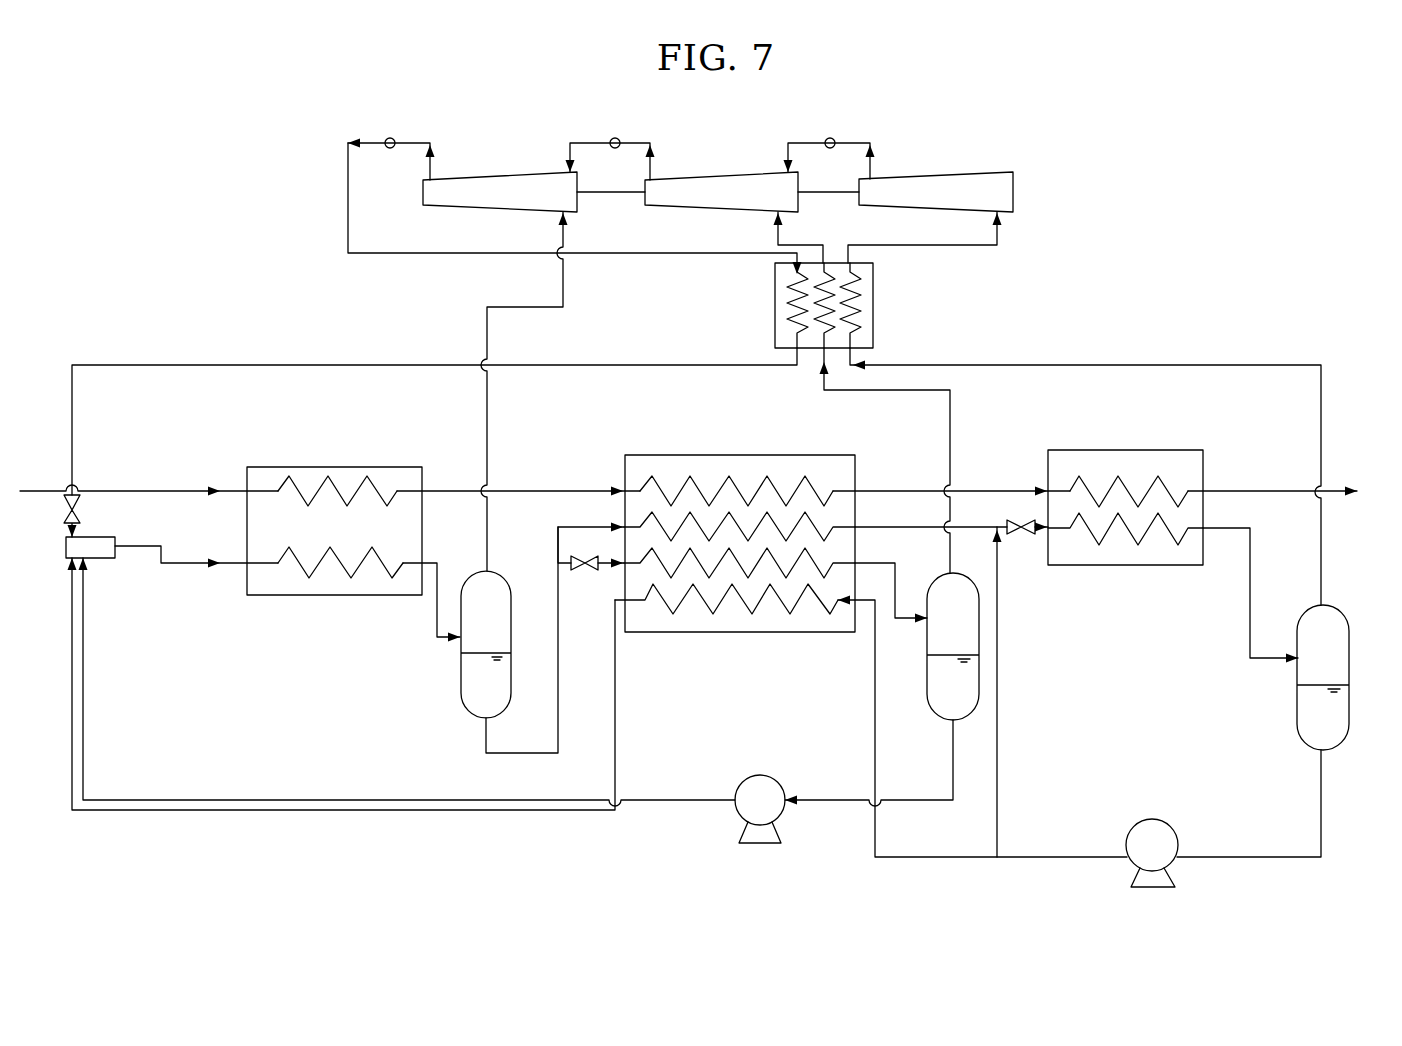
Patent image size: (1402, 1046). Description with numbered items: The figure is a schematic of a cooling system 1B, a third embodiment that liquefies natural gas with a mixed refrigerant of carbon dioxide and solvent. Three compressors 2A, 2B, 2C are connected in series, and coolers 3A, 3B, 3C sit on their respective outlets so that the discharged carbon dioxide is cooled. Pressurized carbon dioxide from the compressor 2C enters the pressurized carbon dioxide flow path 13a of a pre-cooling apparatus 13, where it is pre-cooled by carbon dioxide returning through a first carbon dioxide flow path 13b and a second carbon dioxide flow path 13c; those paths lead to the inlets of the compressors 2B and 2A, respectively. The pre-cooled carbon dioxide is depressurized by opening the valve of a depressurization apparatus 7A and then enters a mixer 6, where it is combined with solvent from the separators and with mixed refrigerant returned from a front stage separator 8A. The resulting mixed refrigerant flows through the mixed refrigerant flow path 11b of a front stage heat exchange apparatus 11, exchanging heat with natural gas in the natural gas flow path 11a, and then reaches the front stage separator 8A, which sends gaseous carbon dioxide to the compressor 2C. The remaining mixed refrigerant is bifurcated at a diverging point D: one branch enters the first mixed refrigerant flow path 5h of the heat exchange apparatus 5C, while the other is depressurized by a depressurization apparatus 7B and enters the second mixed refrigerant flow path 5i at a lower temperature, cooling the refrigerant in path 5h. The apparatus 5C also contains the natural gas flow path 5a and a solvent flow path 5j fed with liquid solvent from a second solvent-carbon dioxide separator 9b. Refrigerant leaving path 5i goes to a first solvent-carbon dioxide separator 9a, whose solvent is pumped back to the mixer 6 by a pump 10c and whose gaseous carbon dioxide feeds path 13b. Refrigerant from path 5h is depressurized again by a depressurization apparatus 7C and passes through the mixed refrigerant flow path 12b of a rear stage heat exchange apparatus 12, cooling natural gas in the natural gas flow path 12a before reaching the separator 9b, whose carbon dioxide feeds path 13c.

The cooling system 1B is at (174, 164).
The compressor 2A is at (912, 178).
The compressor 2B is at (684, 178).
The compressor 2C is at (480, 178).
The cooler 3A is at (830, 138).
The cooler 3B is at (615, 138).
The cooler 3C is at (390, 138).
The heat exchange apparatus 5C is at (655, 455).
The natural gas flow path 5a is at (778, 485).
The first mixed refrigerant flow path 5h is at (806, 520).
The second mixed refrigerant flow path 5i is at (717, 568).
The solvent flow path 5j is at (735, 590).
The mixer 6 is at (66, 545).
The depressurization apparatus 7A is at (80, 498).
The depressurization apparatus 7B is at (585, 570).
The depressurization apparatus 7C is at (1025, 535).
The front stage separator 8A is at (511, 632).
The first solvent-carbon dioxide separator 9a is at (940, 721).
The second solvent-carbon dioxide separator 9b is at (1350, 630).
The pump 10c is at (742, 784).
The front stage heat exchange apparatus 11 is at (270, 467).
The natural gas flow path 11a is at (333, 480).
The mixed refrigerant flow path 11b is at (318, 578).
The rear stage heat exchange apparatus 12 is at (1188, 450).
The natural gas flow path 12a is at (1082, 480).
The mixed refrigerant flow path 12b is at (1125, 520).
The pre-cooling apparatus 13 is at (874, 270).
The pressurized carbon dioxide flow path 13a is at (788, 285).
The first carbon dioxide flow path 13b is at (815, 330).
The second carbon dioxide flow path 13c is at (852, 293).
The diverging point D is at (558, 562).